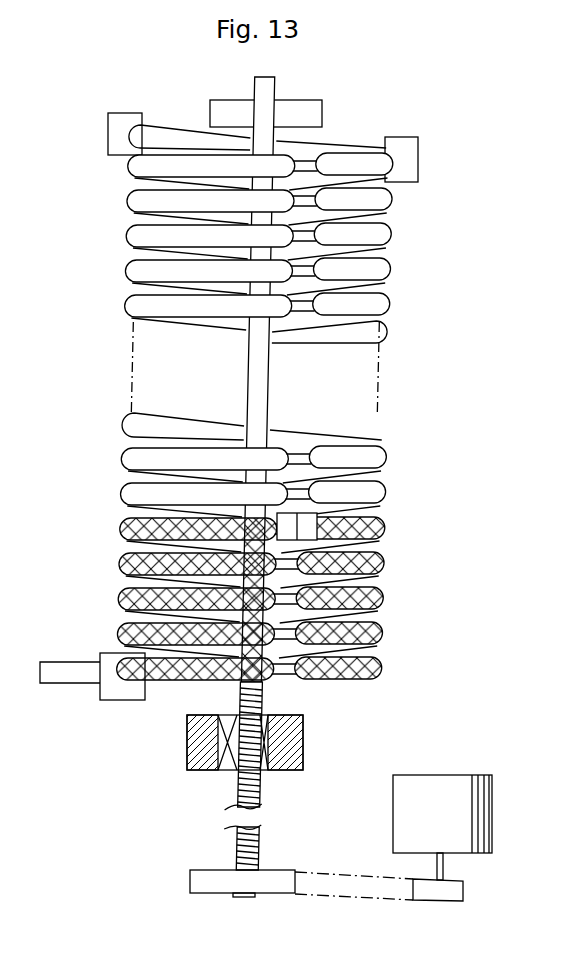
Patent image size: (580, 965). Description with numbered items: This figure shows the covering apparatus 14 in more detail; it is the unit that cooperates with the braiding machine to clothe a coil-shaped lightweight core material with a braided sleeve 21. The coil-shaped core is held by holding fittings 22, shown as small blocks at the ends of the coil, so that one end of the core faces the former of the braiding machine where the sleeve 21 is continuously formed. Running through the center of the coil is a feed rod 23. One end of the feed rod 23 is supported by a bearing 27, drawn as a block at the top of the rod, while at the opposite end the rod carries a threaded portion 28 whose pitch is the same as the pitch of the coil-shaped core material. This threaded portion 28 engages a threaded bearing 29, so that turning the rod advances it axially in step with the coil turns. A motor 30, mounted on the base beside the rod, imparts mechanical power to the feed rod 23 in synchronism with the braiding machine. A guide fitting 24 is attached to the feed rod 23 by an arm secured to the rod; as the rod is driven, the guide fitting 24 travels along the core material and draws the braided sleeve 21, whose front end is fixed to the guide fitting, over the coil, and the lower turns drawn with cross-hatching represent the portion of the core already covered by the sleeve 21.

The covering apparatus 14 is at (100, 383).
The braided sleeve 21 is at (175, 685).
The holding fitting 22 is at (118, 140).
The feed rod 23 is at (267, 395).
The guide fitting 24 is at (318, 528).
The bearing 27 is at (300, 115).
The threaded portion 28 is at (250, 846).
The threaded bearing 29 is at (303, 748).
The motor 30 is at (433, 790).